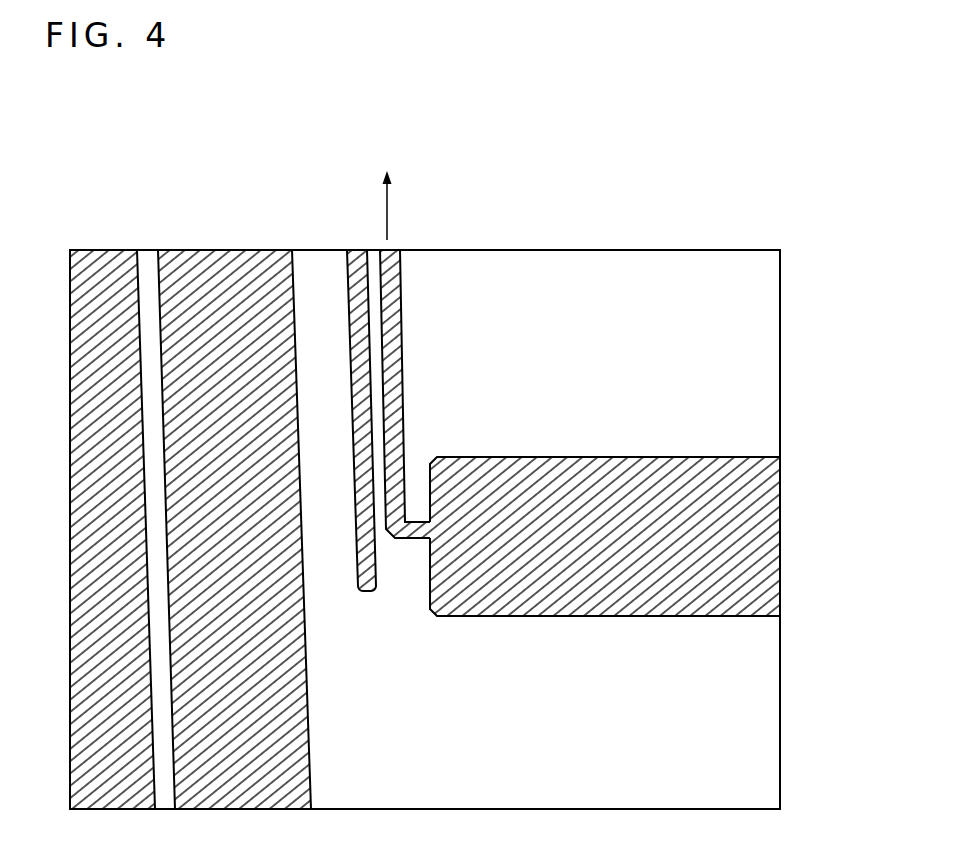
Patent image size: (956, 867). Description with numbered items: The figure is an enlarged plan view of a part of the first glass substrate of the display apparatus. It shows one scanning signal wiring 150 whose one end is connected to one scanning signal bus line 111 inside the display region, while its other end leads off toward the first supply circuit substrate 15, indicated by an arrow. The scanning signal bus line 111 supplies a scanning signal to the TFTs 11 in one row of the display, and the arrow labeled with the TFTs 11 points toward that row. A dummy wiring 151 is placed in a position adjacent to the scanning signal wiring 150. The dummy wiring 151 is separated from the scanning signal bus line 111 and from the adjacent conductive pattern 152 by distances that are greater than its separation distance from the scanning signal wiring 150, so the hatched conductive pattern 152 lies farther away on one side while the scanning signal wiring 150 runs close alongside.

The TFT 11 is at (792, 536).
The first supply circuit substrate 15 is at (393, 188).
The scanning signal bus line 111 is at (767, 503).
The scanning signal wiring 150 is at (398, 282).
The dummy wiring 151 is at (356, 259).
The conductive pattern 152 is at (225, 263).